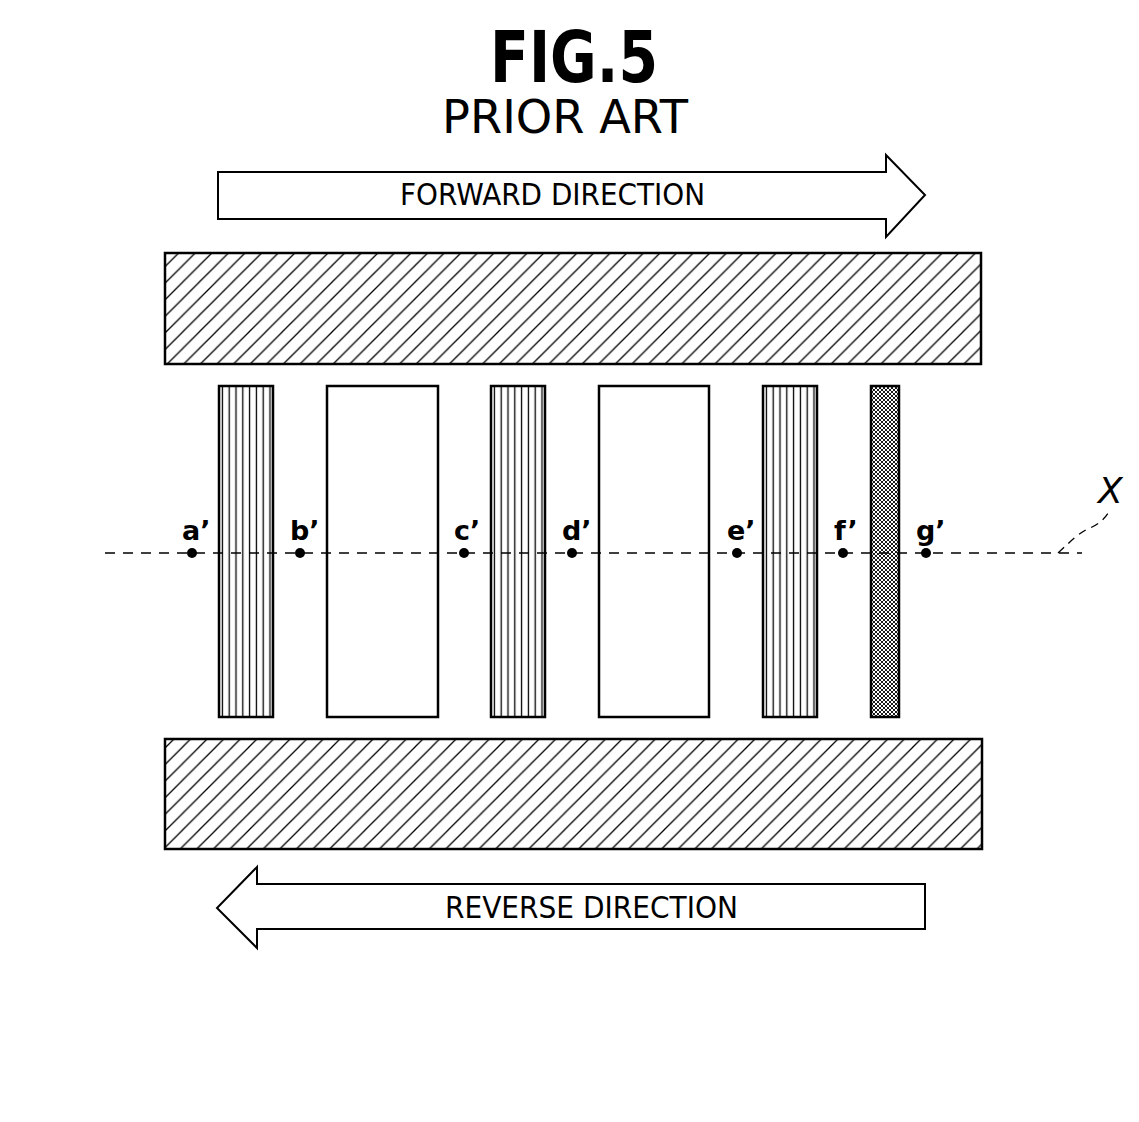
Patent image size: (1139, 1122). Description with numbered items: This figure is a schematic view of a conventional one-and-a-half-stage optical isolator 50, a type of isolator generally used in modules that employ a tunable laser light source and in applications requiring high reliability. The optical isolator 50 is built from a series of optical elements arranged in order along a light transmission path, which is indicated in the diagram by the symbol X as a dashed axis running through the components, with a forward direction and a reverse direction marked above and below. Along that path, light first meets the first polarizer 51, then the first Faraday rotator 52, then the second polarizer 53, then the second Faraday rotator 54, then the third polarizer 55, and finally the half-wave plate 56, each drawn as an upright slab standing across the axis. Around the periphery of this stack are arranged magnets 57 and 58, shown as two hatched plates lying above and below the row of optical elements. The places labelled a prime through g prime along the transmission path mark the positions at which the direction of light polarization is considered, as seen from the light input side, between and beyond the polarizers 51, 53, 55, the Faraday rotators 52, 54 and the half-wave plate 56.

The optical isolator 50 is at (1028, 189).
The first polarizer 51 is at (243, 618).
The first Faraday rotator 52 is at (355, 687).
The second polarizer 53 is at (515, 472).
The second Faraday rotator 54 is at (652, 465).
The third polarizer 55 is at (795, 615).
The half-wave plate 56 is at (886, 678).
The magnet 57 is at (210, 307).
The magnet 58 is at (934, 803).